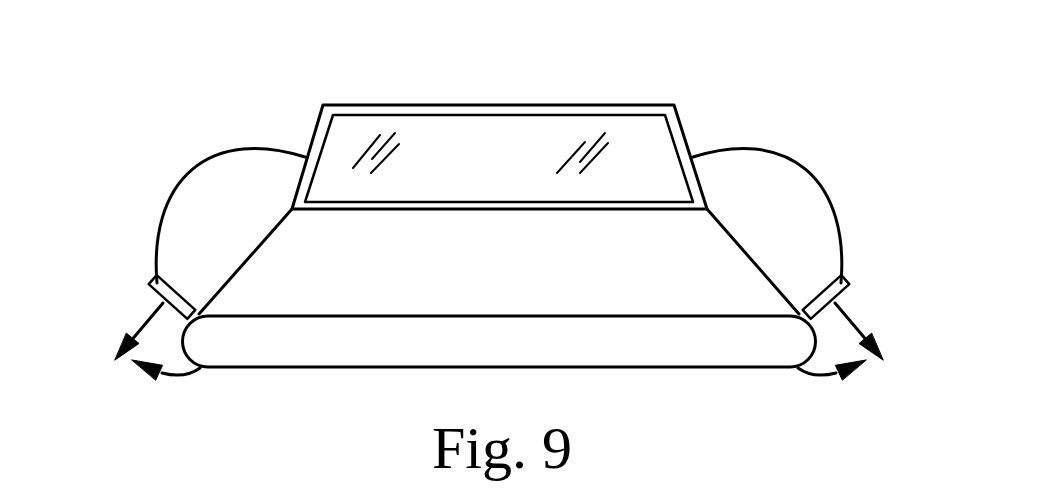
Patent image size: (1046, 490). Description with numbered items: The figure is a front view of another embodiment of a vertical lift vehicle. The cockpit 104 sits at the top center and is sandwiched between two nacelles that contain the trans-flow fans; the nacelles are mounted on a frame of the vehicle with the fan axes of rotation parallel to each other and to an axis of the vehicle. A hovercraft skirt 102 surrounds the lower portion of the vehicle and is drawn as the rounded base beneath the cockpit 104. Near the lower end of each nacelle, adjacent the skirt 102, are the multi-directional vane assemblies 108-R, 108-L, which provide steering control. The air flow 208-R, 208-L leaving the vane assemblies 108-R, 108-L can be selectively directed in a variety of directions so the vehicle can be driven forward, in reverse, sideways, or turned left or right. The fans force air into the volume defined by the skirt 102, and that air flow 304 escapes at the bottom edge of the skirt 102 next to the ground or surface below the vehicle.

The hovercraft skirt 102 is at (312, 368).
The cockpit 104 is at (470, 104).
The multi-directional vane assembly 108-R is at (197, 266).
The multi-directional vane assembly 108-L is at (837, 282).
The air flow 208-R is at (143, 322).
The air flow 208-L is at (855, 322).
The air flow 304 is at (178, 374).